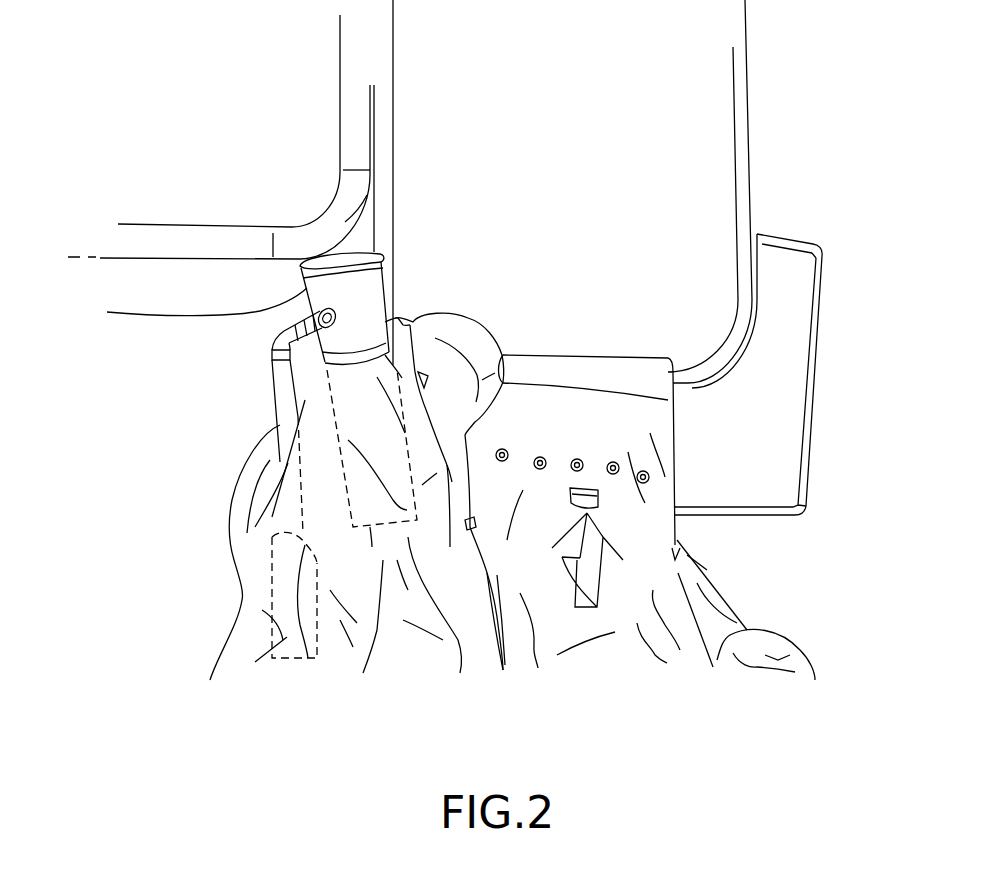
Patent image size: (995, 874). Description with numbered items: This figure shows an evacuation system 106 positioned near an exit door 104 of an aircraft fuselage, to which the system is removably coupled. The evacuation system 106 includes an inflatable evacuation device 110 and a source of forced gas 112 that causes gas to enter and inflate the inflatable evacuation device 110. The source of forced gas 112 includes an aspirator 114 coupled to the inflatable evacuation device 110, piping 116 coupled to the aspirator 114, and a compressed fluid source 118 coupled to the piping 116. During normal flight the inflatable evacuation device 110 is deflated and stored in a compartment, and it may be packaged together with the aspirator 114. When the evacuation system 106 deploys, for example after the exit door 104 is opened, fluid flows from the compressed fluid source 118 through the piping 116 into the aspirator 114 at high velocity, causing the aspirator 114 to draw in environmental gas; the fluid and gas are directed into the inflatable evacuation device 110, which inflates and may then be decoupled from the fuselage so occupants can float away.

The exit door 104 is at (752, 104).
The evacuation system 106 is at (119, 455).
The inflatable evacuation device 110 is at (480, 648).
The source of forced gas 112 is at (334, 248).
The aspirator 114 is at (374, 302).
The piping 116 is at (273, 388).
The compressed fluid source 118 is at (277, 660).